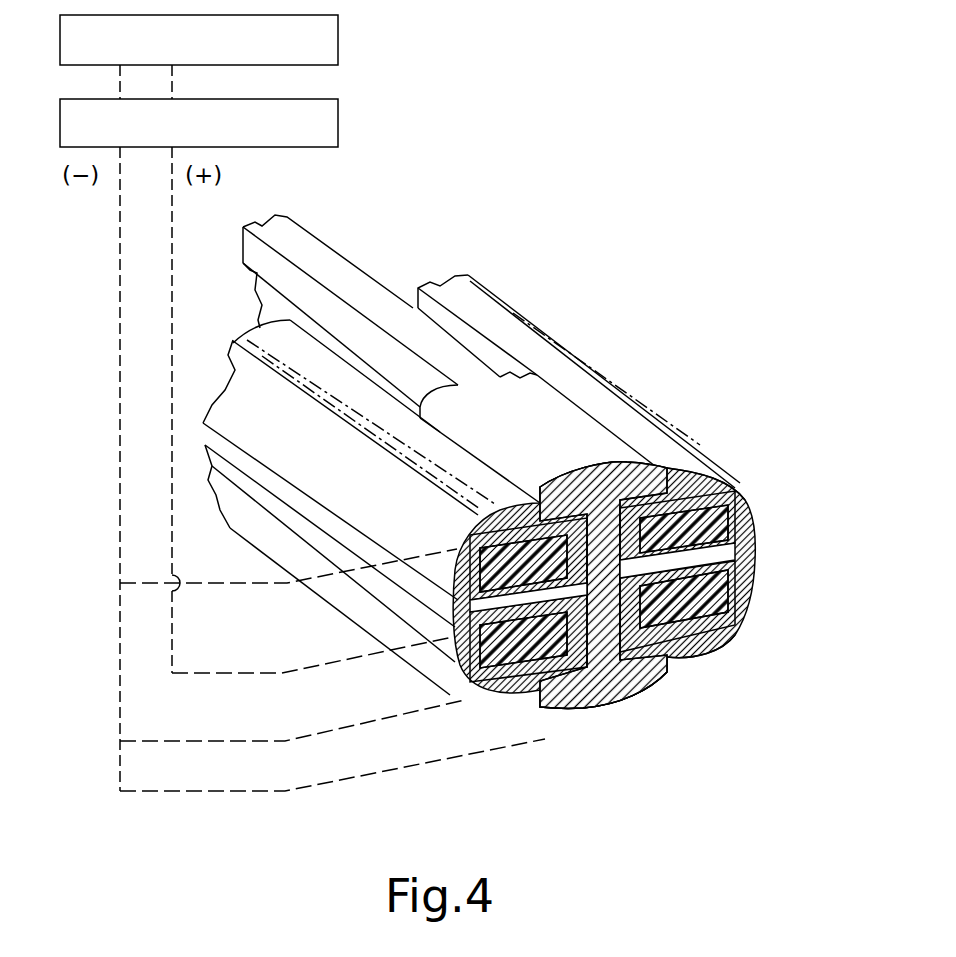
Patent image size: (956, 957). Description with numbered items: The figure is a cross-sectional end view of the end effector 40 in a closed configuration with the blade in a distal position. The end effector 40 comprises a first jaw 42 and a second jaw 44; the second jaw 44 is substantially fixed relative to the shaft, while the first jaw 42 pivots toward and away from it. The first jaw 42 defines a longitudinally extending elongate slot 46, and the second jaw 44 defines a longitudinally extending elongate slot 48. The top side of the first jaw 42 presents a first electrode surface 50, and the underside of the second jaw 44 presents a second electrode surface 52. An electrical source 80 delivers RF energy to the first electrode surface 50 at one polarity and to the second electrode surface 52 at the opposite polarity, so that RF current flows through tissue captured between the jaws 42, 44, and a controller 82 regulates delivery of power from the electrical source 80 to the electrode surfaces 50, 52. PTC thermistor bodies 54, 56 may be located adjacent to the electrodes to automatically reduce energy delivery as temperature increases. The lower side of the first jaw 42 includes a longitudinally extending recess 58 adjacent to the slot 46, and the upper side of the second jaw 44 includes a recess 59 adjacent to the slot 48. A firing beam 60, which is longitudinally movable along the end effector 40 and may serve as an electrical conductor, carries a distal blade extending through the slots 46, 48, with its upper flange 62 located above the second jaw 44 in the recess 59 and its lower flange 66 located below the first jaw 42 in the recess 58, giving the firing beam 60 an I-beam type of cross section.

The end effector 40 is at (570, 196).
The first jaw 42 is at (733, 642).
The second jaw 44 is at (582, 377).
The elongate slot 46 is at (690, 662).
The elongate slot 48 is at (648, 487).
The first electrode surface 50 is at (697, 560).
The second electrode surface 52 is at (477, 610).
The PTC thermistor body 54 is at (720, 596).
The PTC thermistor body 56 is at (735, 488).
The recess 58 is at (643, 677).
The recess 59 is at (468, 347).
The firing beam 60 is at (335, 259).
The upper flange 62 is at (582, 423).
The lower flange 66 is at (600, 698).
The electrical source 80 is at (338, 45).
The controller 82 is at (338, 128).